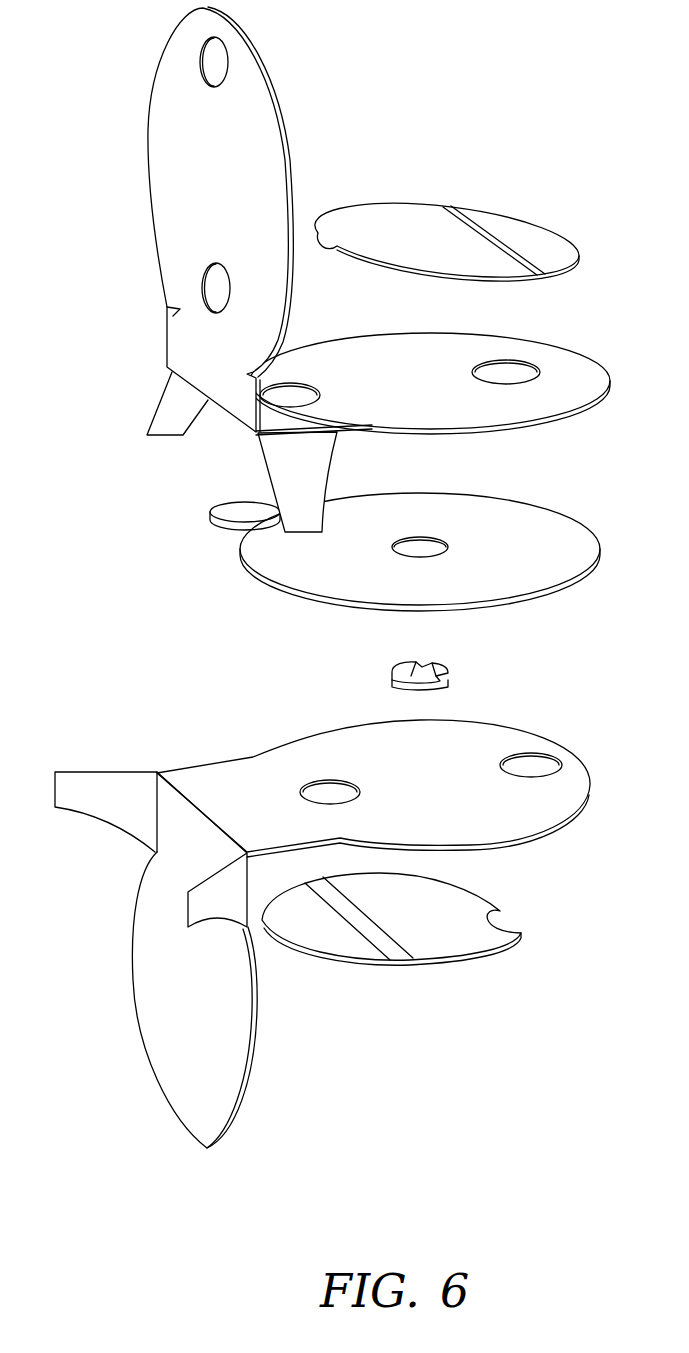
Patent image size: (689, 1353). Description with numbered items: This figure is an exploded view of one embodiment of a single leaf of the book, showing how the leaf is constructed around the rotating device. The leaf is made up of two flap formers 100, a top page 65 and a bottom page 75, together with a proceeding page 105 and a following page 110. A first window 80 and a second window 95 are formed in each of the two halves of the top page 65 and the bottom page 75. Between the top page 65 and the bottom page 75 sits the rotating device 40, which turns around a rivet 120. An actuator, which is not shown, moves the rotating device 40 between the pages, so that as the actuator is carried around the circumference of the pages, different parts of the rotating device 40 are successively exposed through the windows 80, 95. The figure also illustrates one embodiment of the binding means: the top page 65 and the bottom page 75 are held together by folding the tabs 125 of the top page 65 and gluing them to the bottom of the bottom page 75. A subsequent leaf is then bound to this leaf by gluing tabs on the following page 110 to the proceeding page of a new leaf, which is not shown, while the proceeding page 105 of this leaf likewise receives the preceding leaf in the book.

The rotating device 40 is at (568, 557).
The top page 65 is at (598, 365).
The bottom page 75 is at (587, 766).
The first window 80 is at (288, 383).
The second window 95 is at (515, 370).
The flap former 100 is at (508, 220).
The proceeding page 105 is at (268, 82).
The following page 110 is at (230, 1012).
The rivet 120 is at (428, 668).
The tabs 125 is at (300, 464).